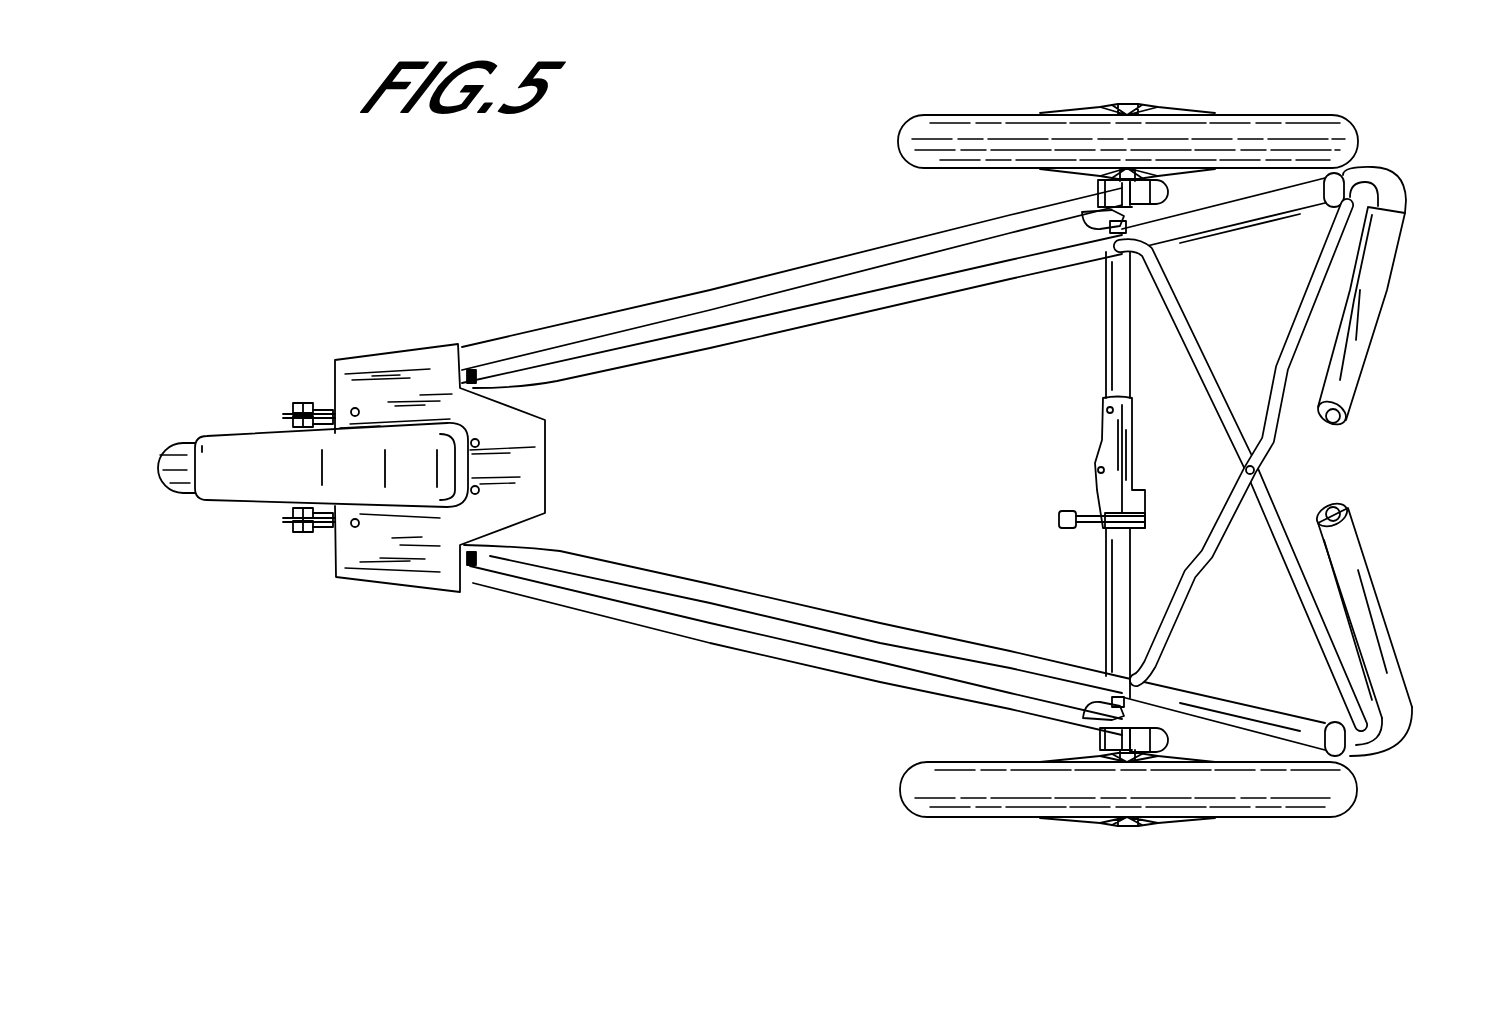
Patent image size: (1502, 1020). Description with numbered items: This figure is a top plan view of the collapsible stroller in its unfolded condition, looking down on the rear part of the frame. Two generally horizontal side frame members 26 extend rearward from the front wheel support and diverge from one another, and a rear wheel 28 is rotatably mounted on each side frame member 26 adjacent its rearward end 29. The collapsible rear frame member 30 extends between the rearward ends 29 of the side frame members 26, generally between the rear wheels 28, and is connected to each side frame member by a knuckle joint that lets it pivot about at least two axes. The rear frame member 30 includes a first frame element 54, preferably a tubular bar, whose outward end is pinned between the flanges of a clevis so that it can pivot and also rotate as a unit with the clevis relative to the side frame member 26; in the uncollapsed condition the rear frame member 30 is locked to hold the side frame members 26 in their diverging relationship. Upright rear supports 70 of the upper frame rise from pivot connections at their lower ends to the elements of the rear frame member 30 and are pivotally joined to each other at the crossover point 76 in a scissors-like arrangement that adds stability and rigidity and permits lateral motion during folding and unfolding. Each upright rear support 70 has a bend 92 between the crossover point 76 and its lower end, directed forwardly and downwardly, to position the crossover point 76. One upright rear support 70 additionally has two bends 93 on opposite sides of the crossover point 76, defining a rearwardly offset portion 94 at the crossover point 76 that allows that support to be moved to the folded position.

The horizontal side frame member 26 is at (628, 622).
The rear wheel 28 is at (999, 818).
The rearward end 29 is at (1145, 722).
The rear frame member 30 is at (1112, 628).
The first frame element 54 is at (1106, 287).
The upright rear support 70 is at (1333, 641).
The crossover point 76 is at (1258, 472).
The bend 92 is at (1172, 264).
The bend 93 is at (1292, 384).
The rearwardly offset portion 94 is at (1275, 440).